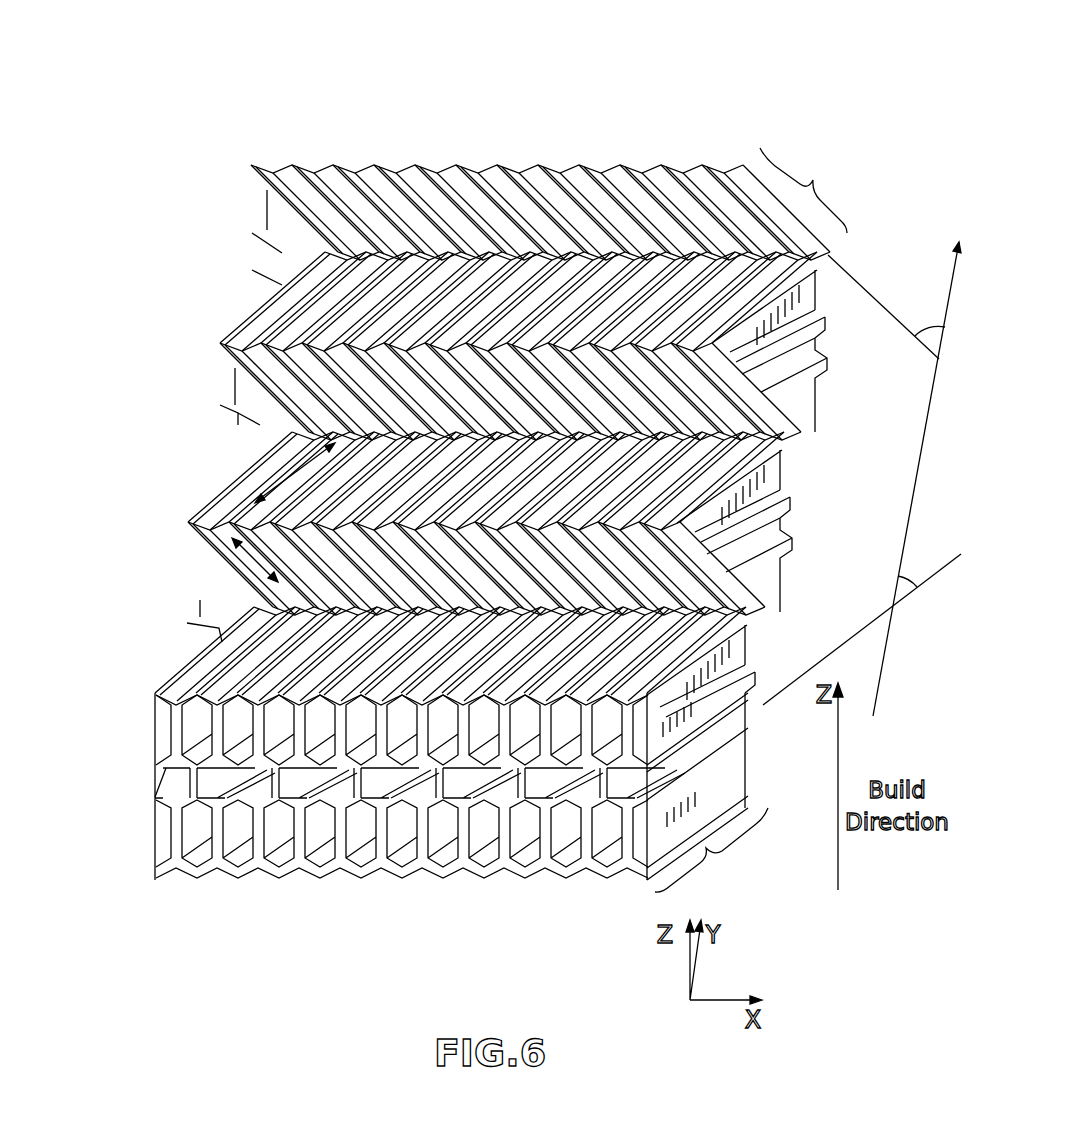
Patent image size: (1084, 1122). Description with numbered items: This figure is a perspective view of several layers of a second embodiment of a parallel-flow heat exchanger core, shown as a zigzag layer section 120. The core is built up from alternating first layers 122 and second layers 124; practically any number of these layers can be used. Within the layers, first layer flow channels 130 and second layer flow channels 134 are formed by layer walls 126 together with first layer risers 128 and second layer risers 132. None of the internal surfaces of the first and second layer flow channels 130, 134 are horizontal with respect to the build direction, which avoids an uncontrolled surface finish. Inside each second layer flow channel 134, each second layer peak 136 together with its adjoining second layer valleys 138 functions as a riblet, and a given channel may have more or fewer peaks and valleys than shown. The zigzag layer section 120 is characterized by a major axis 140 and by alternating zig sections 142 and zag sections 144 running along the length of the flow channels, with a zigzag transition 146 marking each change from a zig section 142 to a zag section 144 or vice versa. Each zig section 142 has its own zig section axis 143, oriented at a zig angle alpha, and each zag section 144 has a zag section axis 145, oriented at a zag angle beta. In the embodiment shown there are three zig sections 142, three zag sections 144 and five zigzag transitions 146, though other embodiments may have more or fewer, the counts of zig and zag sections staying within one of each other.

The zigzag layer section 120 is at (285, 120).
The first layer 122 is at (151, 725).
The second layer 124 is at (157, 785).
The layer wall 126 is at (157, 768).
The first layer riser 128 is at (212, 728).
The first layer flow channel 130 is at (237, 720).
The second layer riser 132 is at (273, 783).
The second layer flow channel 134 is at (310, 787).
The second layer peak 136 is at (450, 790).
The second layer valley 138 is at (373, 787).
The major axis 140 is at (914, 490).
The zig section 142 is at (711, 850).
The zig section axis 143 is at (255, 590).
The zag section 144 is at (807, 189).
The zag section axis 145 is at (297, 475).
The zigzag transition 146 is at (772, 600).